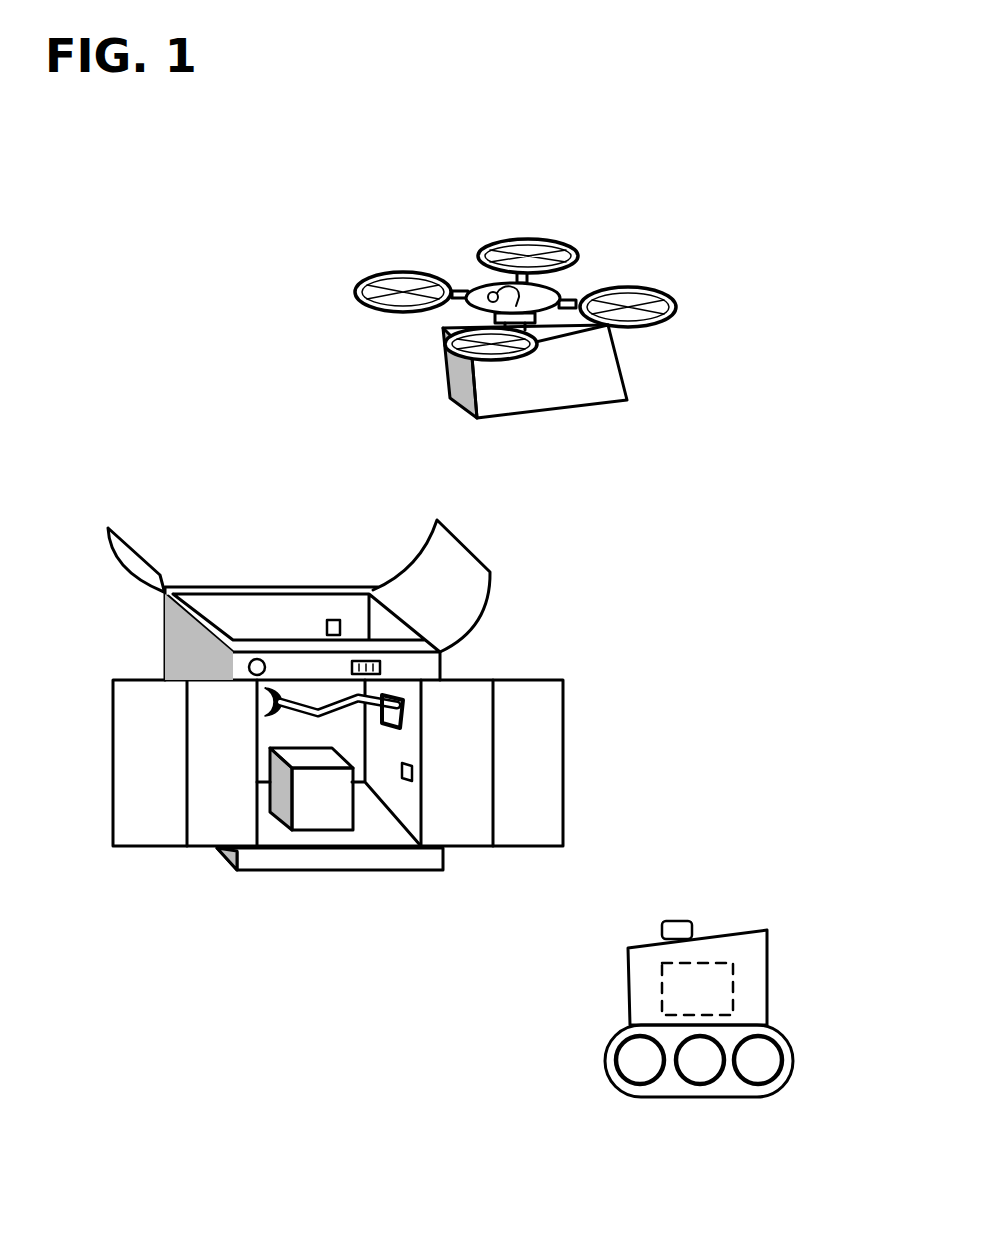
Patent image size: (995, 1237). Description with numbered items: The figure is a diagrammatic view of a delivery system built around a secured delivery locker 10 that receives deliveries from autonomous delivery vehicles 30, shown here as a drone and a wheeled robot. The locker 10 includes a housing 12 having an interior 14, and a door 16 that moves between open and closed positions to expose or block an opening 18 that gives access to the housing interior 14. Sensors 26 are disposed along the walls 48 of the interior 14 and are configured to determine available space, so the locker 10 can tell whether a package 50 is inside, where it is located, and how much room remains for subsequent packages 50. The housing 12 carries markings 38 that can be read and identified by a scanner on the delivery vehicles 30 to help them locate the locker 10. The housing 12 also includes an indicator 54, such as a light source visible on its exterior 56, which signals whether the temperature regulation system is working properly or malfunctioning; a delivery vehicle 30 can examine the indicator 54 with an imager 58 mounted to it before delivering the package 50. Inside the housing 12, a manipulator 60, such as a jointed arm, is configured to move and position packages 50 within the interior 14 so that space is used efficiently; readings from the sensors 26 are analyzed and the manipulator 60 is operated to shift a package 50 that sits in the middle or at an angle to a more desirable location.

The secured delivery locker 10 is at (590, 603).
The housing 12 is at (215, 857).
The interior 14 is at (393, 824).
The door 16 is at (462, 567).
The opening 18 is at (262, 598).
The sensors 26 is at (339, 619).
The autonomous delivery vehicles 30 is at (560, 285).
The markings 38 is at (377, 682).
The walls 48 is at (412, 815).
The package 50 is at (600, 390).
The indicator 54 is at (248, 665).
The exterior 56 is at (283, 667).
The imager 58 is at (497, 290).
The manipulator 60 is at (375, 695).